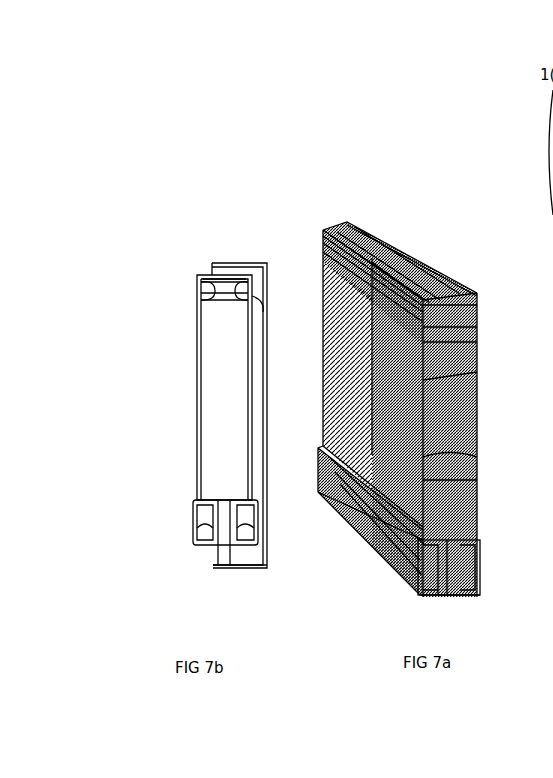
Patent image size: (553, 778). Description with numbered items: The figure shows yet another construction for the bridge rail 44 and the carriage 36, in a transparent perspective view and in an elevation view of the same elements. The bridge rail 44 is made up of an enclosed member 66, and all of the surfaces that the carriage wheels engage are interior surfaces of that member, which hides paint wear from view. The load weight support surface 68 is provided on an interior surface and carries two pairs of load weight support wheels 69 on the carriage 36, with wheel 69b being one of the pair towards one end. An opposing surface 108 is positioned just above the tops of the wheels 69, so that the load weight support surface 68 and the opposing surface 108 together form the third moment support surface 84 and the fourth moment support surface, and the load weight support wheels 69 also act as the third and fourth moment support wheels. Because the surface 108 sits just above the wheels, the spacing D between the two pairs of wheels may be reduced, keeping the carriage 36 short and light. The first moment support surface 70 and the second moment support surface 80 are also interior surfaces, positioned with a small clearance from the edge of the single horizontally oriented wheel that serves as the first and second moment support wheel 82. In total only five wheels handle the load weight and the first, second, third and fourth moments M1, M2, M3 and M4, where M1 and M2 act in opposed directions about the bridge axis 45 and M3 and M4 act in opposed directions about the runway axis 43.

In FIG. 7B, the carriage 36 is at (258, 570).
In FIG. 7A, the carriage 36 is at (467, 597).
In FIG. 7A, the runway axis 43 is at (480, 368).
In FIG. 7B, the bridge rail 44 is at (197, 483).
In FIG. 7A, the bridge rail 44 is at (325, 252).
In FIG. 7B, the bridge axis 45 is at (223, 408).
In FIG. 7A, the bridge axis 45 is at (297, 385).
In FIG. 7B, the enclosed member 66 is at (197, 425).
In FIG. 7A, the enclosed member 66 is at (340, 318).
In FIG. 7B, the load weight support surface 68 is at (267, 530).
In FIG. 7A, the load weight support surface 68 is at (450, 600).
In FIG. 7B, the load weight support wheels 69 is at (195, 518).
In FIG. 7A, the load weight support wheels 69 is at (484, 440).
In FIG. 7B, the load weight support wheel 69b is at (253, 525).
In FIG. 7A, the load weight support wheel 69b is at (482, 548).
In FIG. 7B, the first moment support surface 70 is at (240, 320).
In FIG. 7B, the second moment support surface 80 is at (210, 300).
In FIG. 7B, the first moment support wheel 82 is at (223, 283).
In FIG. 7A, the first moment support wheel 82 is at (415, 228).
In FIG. 7B, the third moment support surface 84 is at (216, 568).
In FIG. 7B, the opposing surface 108 is at (217, 547).
In FIG. 7A, the spacing D is at (475, 484).
In FIG. 7A, the first moment M1 is at (370, 110).
In FIG. 7A, the second moment M2 is at (372, 83).
In FIG. 7A, the third moment M3 is at (428, 85).
In FIG. 7A, the fourth moment M4 is at (388, 95).